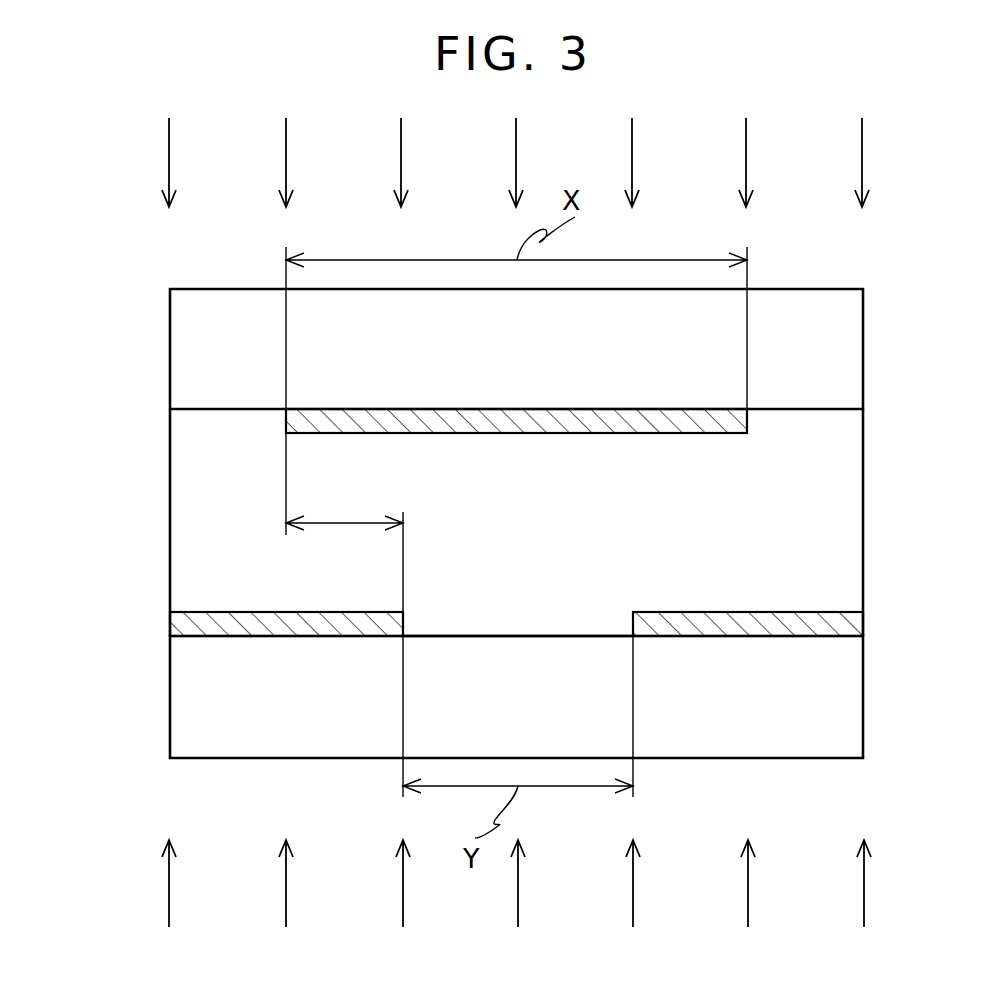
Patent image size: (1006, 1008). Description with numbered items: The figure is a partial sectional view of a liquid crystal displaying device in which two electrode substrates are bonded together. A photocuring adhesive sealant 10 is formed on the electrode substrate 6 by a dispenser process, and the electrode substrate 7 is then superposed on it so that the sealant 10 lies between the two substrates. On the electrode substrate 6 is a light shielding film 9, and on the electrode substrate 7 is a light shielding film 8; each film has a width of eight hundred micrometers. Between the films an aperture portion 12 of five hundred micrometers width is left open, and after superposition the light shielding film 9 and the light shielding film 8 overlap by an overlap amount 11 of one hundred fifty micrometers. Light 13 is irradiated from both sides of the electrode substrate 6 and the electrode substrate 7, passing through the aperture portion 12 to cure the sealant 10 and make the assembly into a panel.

The electrode substrate 6 is at (830, 347).
The electrode substrate 7 is at (830, 703).
The light shielding film 8 is at (205, 625).
The light shielding film 9 is at (718, 422).
The photocuring adhesive sealant 10 is at (838, 514).
The overlap amount 11 is at (345, 523).
The aperture portion 12 is at (535, 620).
The light 13 is at (862, 158).